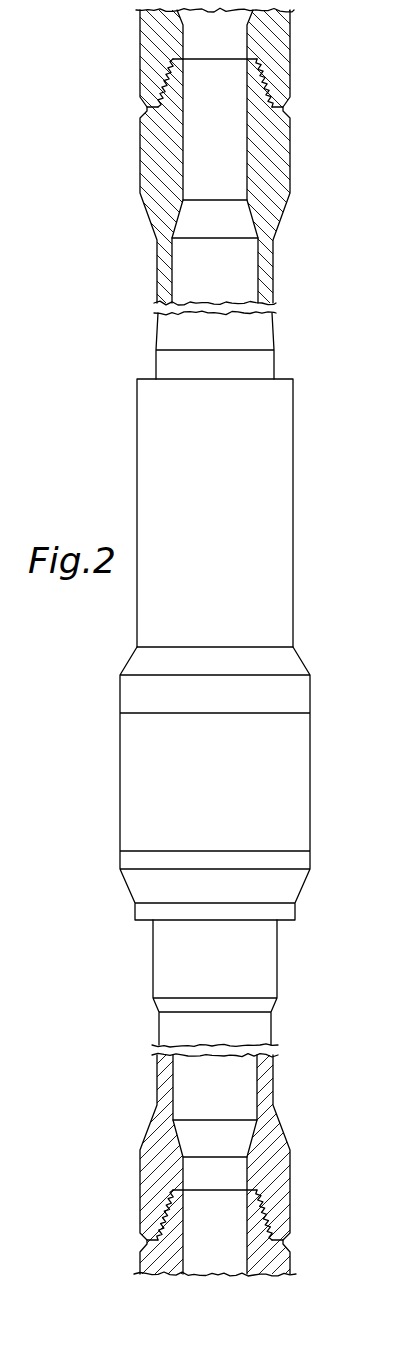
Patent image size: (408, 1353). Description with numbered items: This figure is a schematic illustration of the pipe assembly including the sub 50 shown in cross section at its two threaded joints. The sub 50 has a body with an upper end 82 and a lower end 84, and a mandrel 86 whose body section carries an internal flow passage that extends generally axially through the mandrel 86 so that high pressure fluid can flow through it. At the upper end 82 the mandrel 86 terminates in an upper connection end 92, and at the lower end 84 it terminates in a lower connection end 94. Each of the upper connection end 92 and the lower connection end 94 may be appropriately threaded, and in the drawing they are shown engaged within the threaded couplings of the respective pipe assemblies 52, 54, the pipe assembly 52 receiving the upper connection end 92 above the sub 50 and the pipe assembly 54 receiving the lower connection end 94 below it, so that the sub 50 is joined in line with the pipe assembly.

The sub 50 is at (241, 679).
The pipe assembly 52 is at (288, 70).
The pipe assembly 54 is at (146, 1260).
The upper end 82 is at (276, 335).
The lower end 84 is at (160, 1029).
The mandrel 86 is at (296, 470).
The upper connection end 92 is at (265, 108).
The lower connection end 94 is at (265, 1207).